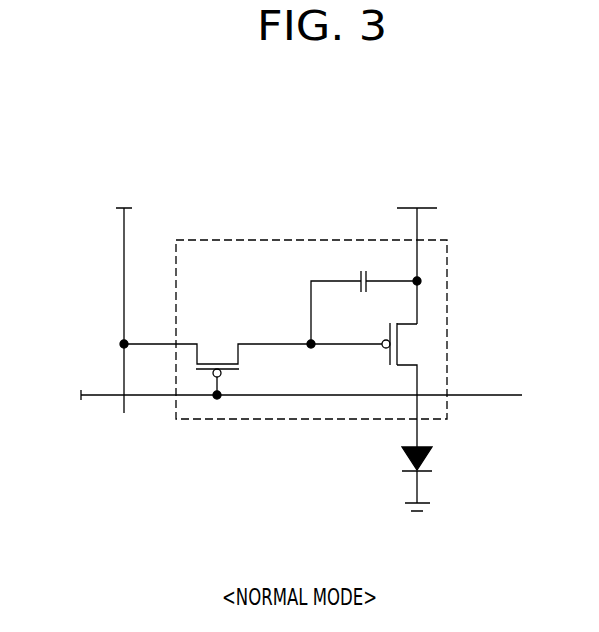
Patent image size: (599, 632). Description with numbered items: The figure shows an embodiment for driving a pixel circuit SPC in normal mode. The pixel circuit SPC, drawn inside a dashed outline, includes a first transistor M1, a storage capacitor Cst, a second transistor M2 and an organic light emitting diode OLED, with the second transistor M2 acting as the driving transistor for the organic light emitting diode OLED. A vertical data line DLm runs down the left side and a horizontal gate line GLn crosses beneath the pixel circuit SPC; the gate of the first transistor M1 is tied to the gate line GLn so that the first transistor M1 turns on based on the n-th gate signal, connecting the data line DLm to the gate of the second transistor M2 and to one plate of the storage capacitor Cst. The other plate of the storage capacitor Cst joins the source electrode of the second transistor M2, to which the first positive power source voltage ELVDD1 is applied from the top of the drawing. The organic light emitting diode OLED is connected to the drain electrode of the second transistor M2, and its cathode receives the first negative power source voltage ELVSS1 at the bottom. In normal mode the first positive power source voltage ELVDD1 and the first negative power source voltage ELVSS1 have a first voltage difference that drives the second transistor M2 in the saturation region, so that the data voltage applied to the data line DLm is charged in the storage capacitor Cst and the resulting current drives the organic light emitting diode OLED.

The pixel circuit SPC is at (295, 170).
The data line DLm is at (123, 297).
The n-th gate line GLn is at (279, 395).
The first positive power source voltage ELVDD1 is at (417, 252).
The first negative power source voltage ELVSS1 is at (415, 524).
The first transistor M1 is at (215, 365).
The second transistor M2 is at (370, 385).
The storage capacitor Cst is at (364, 296).
The organic light emitting diode OLED is at (443, 473).